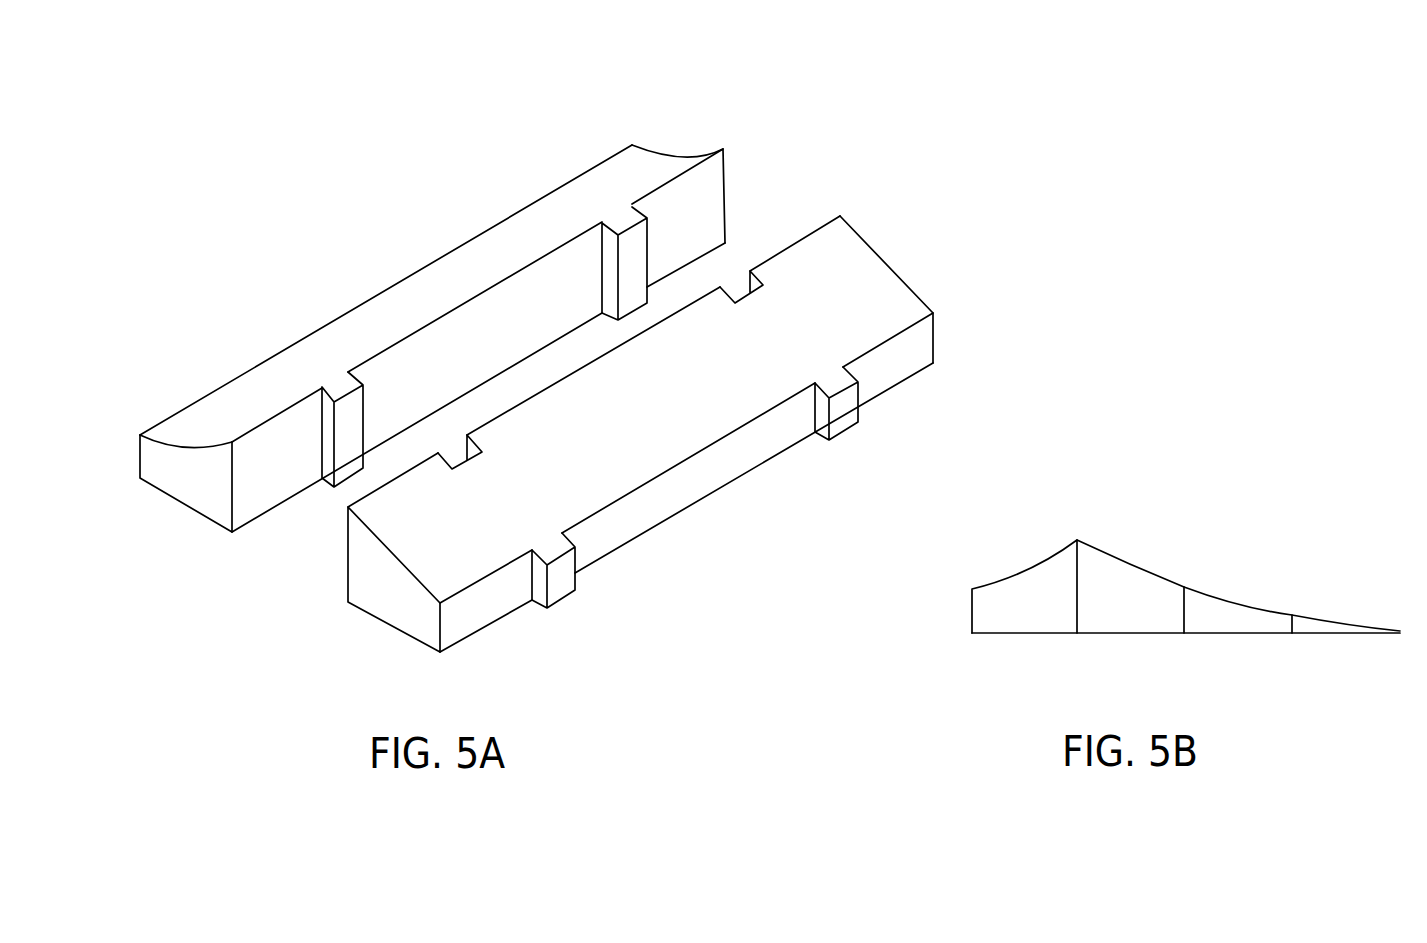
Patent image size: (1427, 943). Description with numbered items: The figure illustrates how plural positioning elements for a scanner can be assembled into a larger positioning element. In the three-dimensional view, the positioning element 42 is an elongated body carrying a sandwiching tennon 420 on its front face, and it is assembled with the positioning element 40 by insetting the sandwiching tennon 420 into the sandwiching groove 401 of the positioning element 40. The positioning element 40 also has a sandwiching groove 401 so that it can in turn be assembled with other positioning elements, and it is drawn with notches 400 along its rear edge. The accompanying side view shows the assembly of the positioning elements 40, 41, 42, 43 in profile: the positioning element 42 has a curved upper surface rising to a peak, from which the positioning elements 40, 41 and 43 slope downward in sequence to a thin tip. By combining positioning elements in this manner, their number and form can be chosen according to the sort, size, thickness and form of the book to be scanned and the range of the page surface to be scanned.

In FIG. 5A, the positioning element 40 is at (863, 275).
In FIG. 5B, the positioning element 40 is at (1125, 583).
In FIG. 5A, the positioning element 42 is at (642, 163).
In FIG. 5B, the positioning element 42 is at (1019, 597).
In FIG. 5A, the sandwiching tennon 420 is at (627, 220).
In FIG. 5A, the notch in lower body 400 is at (742, 290).
In FIG. 5A, the sandwiching groove 401 is at (843, 413).
In FIG. 5B, the positioning element 41 is at (1231, 608).
In FIG. 5B, the positioning element 43 is at (1318, 623).